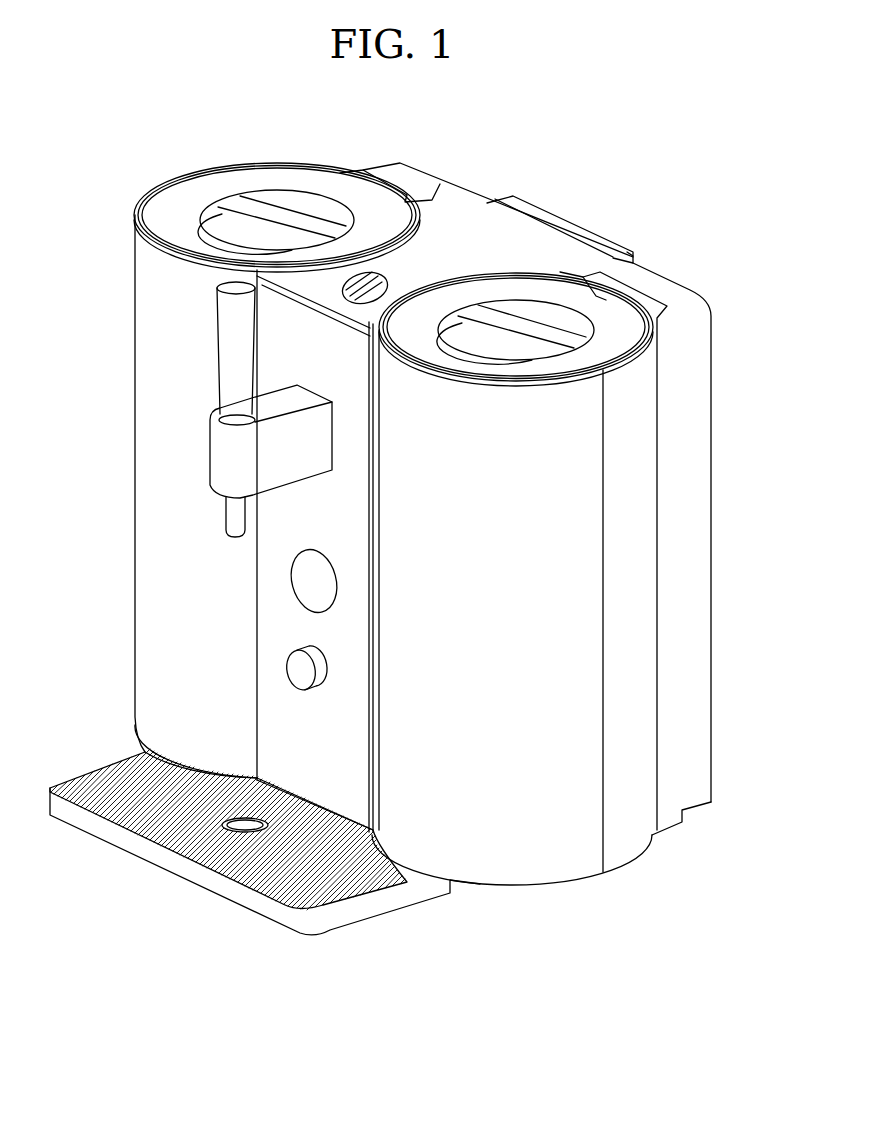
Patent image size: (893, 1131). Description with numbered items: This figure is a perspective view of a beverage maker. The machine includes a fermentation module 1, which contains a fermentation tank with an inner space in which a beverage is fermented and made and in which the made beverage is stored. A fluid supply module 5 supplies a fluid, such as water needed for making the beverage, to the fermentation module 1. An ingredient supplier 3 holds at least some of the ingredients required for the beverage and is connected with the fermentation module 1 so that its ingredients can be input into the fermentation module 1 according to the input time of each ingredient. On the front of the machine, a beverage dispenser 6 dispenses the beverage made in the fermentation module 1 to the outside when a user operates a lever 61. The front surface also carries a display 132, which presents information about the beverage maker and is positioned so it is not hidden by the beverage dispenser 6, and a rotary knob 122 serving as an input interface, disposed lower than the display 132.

The fermentation module 1 is at (198, 163).
The ingredient supplier 3 is at (497, 246).
The fluid supply module 5 is at (667, 468).
The beverage dispenser 6 is at (200, 450).
The lever 61 is at (235, 350).
The display 132 is at (305, 580).
The rotary knob 122 is at (298, 673).